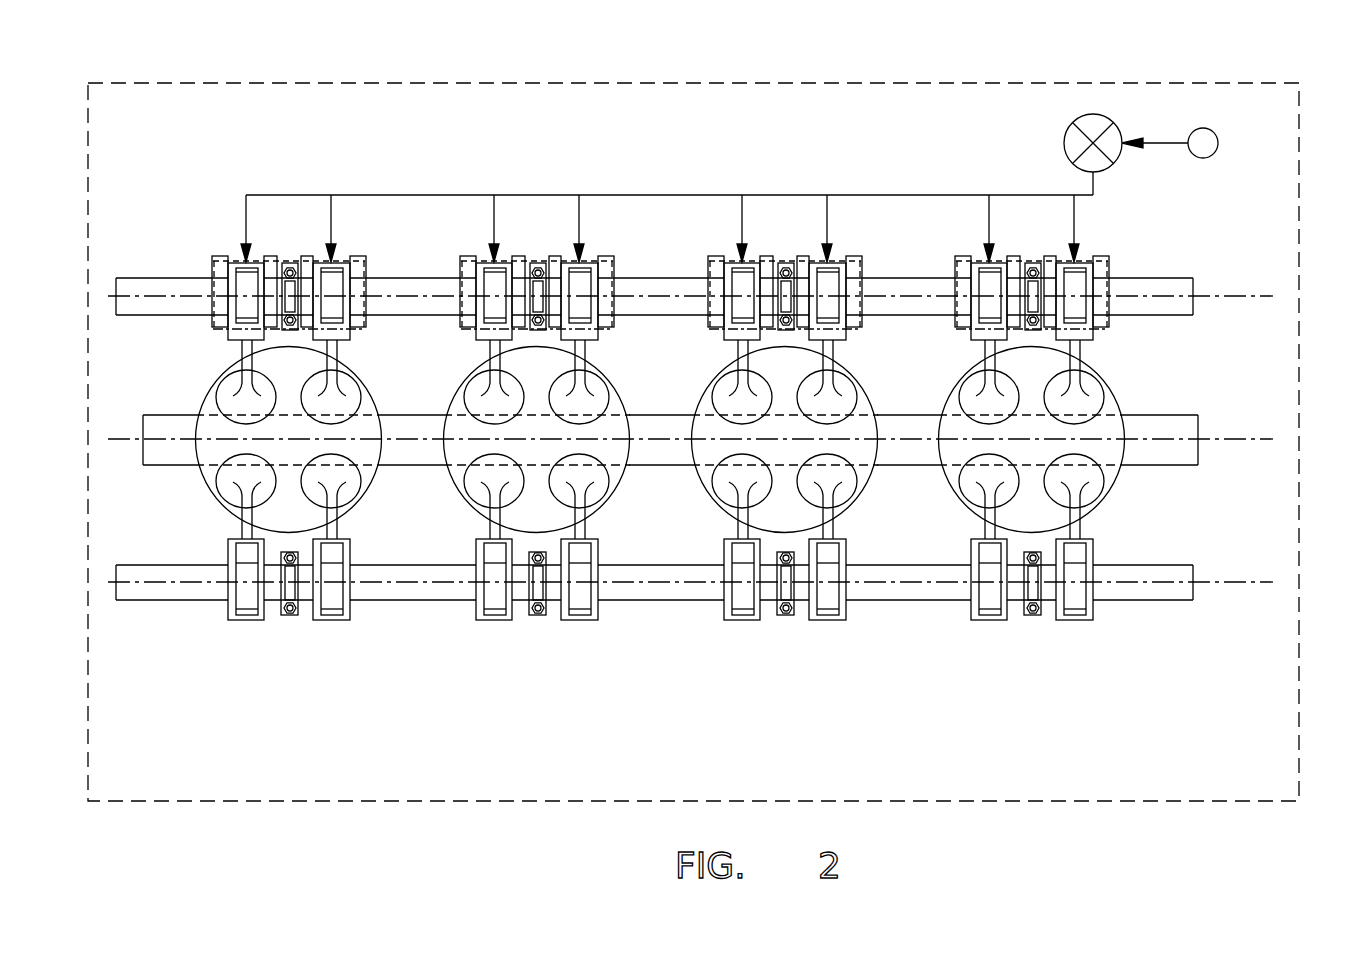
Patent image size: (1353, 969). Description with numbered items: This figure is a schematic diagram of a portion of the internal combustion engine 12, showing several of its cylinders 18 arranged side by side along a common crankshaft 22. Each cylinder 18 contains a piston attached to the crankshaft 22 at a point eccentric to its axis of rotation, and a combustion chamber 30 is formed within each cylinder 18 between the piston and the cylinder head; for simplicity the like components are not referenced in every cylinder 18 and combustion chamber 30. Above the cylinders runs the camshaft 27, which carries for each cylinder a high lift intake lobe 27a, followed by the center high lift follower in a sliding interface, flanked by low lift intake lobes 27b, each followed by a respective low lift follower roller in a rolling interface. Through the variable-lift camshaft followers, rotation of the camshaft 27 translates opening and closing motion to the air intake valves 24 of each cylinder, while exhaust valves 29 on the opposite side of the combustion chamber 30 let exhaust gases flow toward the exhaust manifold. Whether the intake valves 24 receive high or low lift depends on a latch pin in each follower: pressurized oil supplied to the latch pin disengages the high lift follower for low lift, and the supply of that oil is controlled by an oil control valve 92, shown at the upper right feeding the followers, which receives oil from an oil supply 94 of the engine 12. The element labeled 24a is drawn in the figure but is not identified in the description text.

The internal combustion engine 12 is at (1006, 806).
The cylinder 18 is at (611, 443).
The crankshaft 22 is at (1175, 433).
The air intake valve 24 is at (231, 405).
The actuator 24a is at (238, 273).
The camshaft 27 is at (1158, 311).
The high lift intake lobe 27a is at (335, 282).
The low lift intake lobe 27b is at (220, 277).
The exhaust valve 29 is at (232, 474).
The combustion chamber 30 is at (635, 439).
The oil control valve 92 is at (1072, 138).
The oil supply 94 is at (1212, 150).